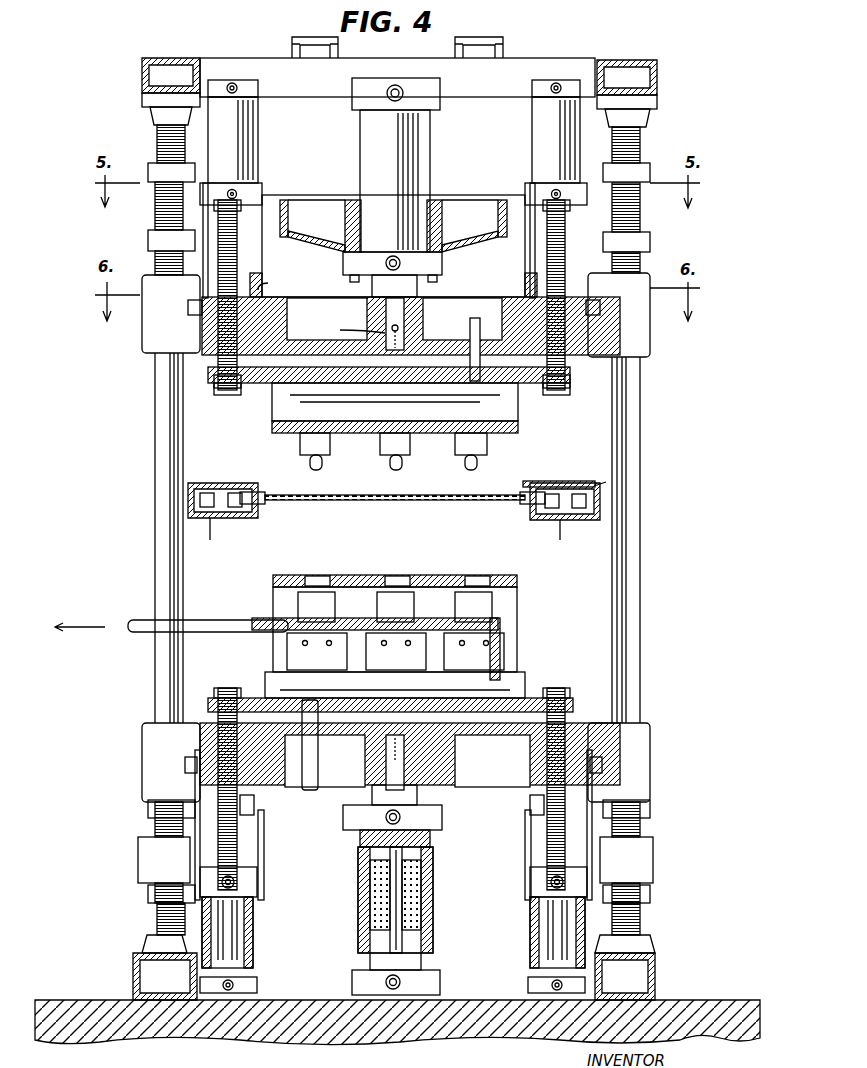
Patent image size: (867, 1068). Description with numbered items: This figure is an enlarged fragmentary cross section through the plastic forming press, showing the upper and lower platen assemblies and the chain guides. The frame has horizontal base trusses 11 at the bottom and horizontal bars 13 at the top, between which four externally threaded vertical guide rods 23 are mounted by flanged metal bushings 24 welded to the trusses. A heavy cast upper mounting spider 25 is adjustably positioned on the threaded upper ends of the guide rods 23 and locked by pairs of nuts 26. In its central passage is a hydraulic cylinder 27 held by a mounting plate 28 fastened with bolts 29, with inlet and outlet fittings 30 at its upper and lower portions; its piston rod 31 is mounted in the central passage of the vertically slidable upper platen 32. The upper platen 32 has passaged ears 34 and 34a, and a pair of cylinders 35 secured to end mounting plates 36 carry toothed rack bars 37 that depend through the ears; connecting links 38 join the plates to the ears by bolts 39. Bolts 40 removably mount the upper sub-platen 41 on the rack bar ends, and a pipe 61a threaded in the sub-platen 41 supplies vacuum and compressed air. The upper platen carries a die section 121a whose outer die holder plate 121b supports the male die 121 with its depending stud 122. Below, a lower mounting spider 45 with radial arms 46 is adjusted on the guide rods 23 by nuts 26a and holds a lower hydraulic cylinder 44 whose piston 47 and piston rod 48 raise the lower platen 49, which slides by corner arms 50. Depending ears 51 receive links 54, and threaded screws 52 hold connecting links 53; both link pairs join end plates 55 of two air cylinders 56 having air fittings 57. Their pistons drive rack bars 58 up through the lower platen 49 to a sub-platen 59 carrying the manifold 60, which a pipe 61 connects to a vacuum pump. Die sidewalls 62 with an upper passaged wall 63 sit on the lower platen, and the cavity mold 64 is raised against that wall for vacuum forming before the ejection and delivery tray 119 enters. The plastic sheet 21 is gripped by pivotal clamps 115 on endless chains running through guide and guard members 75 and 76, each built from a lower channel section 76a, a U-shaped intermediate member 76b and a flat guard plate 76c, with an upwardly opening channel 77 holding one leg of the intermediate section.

The horizontal base connectors or trusses 11 is at (133, 975).
The horizontal bars 13 is at (142, 68).
The plastic film or plastic sheets 21 is at (393, 500).
The guide rods 23 is at (155, 402).
The flanged metal bushings 24 is at (150, 115).
The upper mounting frame or spider 25 is at (440, 195).
The nuts 26 is at (165, 172).
The adjustable nuts 26a is at (148, 809).
The hydraulic cylinder 27 is at (380, 138).
The mounting plate 28 is at (442, 260).
The bolts 29 is at (430, 284).
The inlet and outlet fittings 30 is at (387, 93).
The piston rod 31 is at (350, 325).
The upper platen 32 is at (345, 310).
The ears 34 is at (210, 300).
The ears 34a is at (284, 273).
The hydraulic or air cylinders 35 is at (225, 152).
The end mounting plates 36 is at (208, 195).
The toothed rack bars 37 is at (218, 267).
The connecting links 38 is at (200, 210).
The bolts 39 is at (188, 308).
The bolts 40 is at (228, 395).
The guide supporting plate or sub-platen 41 is at (258, 383).
The lower hydraulic cylinder 44 is at (433, 914).
The lower mounting spider 45 is at (343, 822).
The radial arms 46 is at (160, 862).
The piston 47 is at (375, 939).
The piston rod 48 is at (390, 908).
The lower platen 49 is at (200, 342).
The corner arms 50 is at (160, 745).
The apertured ears 51 is at (250, 800).
The threaded screws 52 is at (185, 769).
The connecting links 53 is at (195, 840).
The links 54 is at (264, 866).
The end plates 55 is at (250, 886).
The air cylinders 56 is at (253, 935).
The air fittings 57 is at (257, 984).
The rack bars 58 is at (222, 796).
The sub-platen 59 is at (555, 698).
The manifold portion 60 is at (530, 672).
The pipe 61 is at (313, 778).
The pipe 61a is at (470, 330).
The vertical sidewall 62 is at (517, 616).
The upper passaged wall 63 is at (517, 582).
The cavity mold 64 is at (350, 633).
The guide and guard member 75 is at (195, 483).
The guide and guard member 76 is at (600, 490).
The lower section 76a is at (560, 520).
The intermediate member 76b is at (600, 483).
The flat guard plate and shield 76c is at (555, 481).
The metal channel 77 is at (225, 518).
The pivotal metal clamps 115 is at (262, 504).
The ejection and delivery tray 119 is at (225, 620).
The male die 121 is at (402, 465).
The die section 121a is at (518, 427).
The outer die holder plate 121b is at (487, 445).
The depending stud 122 is at (322, 465).